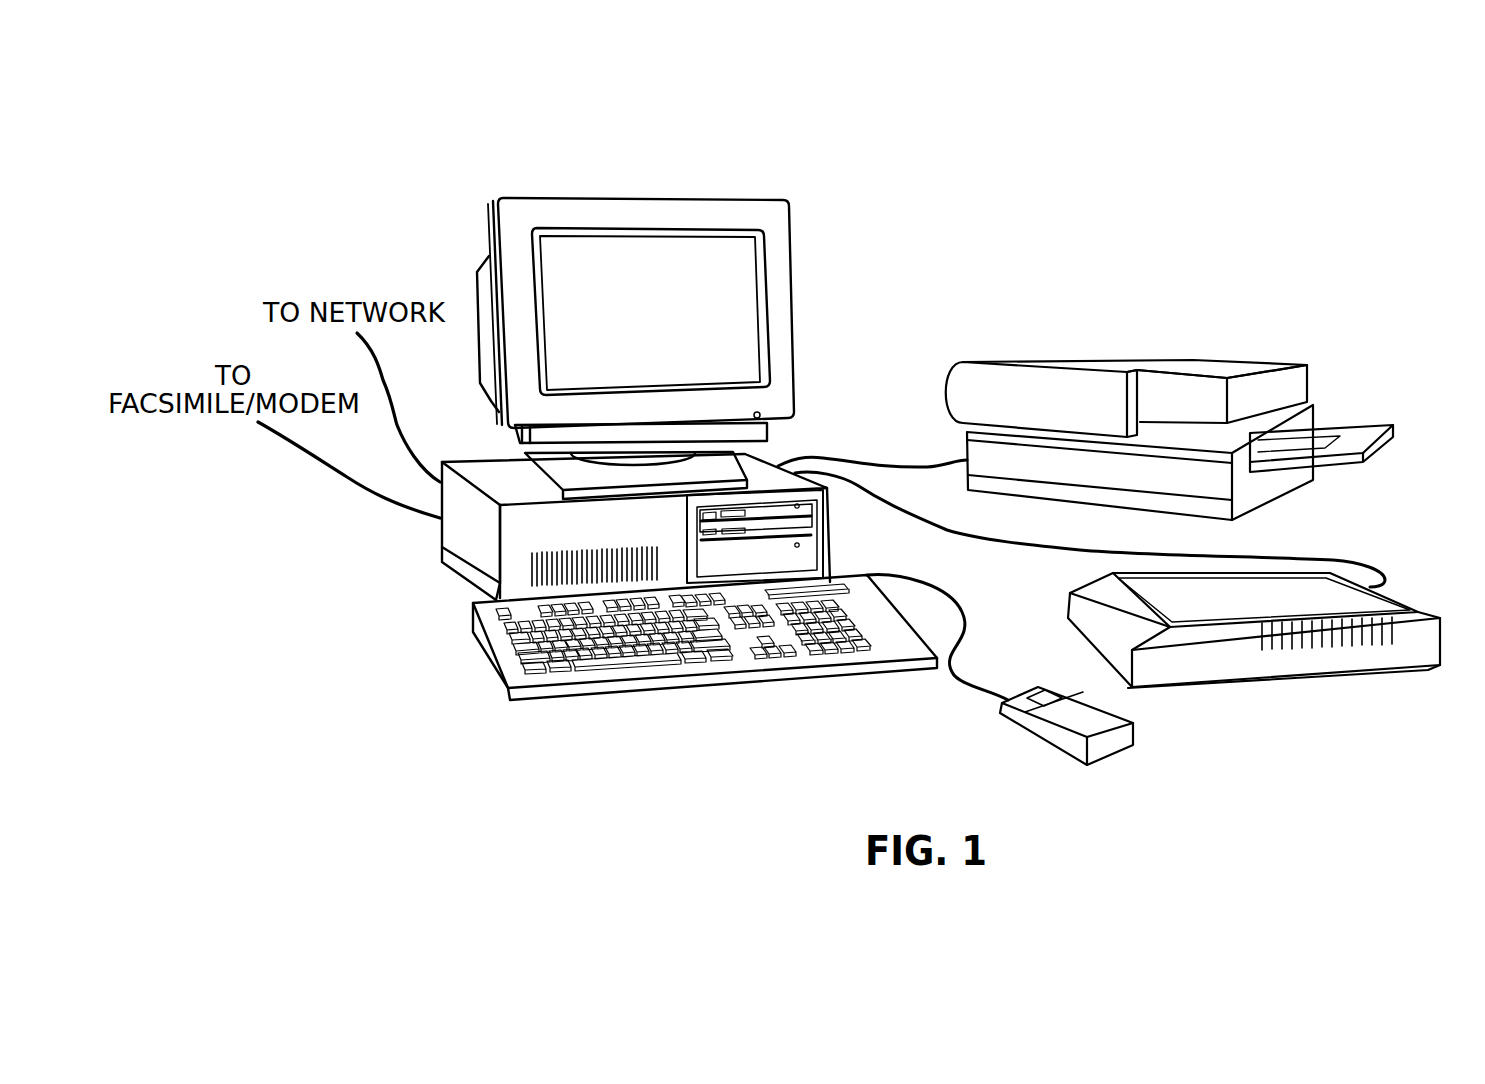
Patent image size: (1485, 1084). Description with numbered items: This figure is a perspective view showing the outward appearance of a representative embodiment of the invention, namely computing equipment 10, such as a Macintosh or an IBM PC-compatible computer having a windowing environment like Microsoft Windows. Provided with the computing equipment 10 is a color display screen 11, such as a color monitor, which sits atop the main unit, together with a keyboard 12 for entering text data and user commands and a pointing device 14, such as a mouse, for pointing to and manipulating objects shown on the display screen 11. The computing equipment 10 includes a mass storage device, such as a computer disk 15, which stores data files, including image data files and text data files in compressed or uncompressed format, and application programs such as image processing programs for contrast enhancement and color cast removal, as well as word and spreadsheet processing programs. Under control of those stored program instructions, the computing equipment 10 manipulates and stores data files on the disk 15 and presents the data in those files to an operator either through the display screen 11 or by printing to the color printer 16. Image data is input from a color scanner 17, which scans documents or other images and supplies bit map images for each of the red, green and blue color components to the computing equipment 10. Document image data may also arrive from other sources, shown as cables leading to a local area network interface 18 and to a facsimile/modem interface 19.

The computing equipment 10 is at (862, 279).
The color display screen 11 is at (677, 197).
The keyboard 12 is at (578, 680).
The pointing device 14 is at (1103, 760).
The computer disk 15 is at (787, 530).
The color printer 16 is at (1085, 355).
The color scanner 17 is at (1292, 683).
The local area network interface 18 is at (396, 394).
The facsimile/modem interface 19 is at (343, 482).